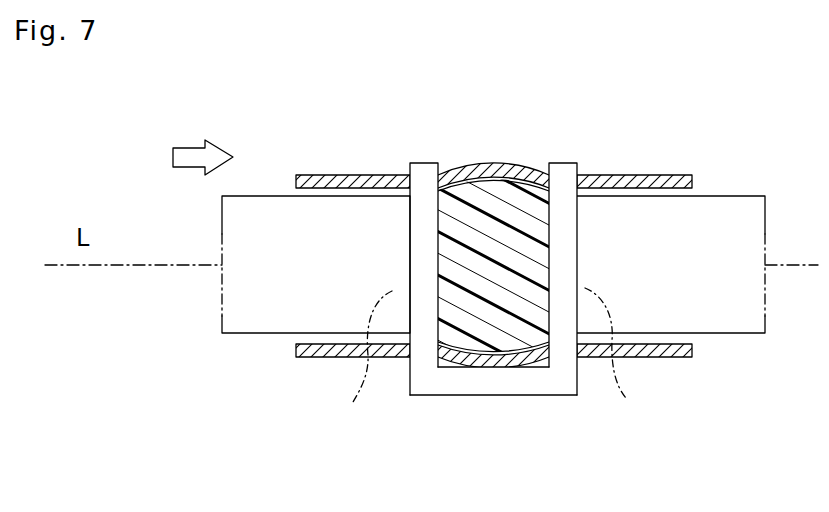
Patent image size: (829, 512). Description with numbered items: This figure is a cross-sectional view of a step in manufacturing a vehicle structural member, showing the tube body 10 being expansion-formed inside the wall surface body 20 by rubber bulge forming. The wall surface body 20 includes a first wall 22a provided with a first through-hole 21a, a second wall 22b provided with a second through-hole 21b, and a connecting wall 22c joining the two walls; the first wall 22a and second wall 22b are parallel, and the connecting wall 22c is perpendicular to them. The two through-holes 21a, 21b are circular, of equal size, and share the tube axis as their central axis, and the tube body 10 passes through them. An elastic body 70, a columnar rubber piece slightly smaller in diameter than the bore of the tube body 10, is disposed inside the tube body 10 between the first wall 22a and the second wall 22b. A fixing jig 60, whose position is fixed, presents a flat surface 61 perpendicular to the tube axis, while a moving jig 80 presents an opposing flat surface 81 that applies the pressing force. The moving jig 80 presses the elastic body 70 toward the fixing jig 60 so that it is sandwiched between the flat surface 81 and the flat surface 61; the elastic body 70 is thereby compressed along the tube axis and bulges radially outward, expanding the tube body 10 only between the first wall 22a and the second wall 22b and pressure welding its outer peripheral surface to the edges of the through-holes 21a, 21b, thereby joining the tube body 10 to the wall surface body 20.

The tube body 10 is at (350, 174).
The wall surface body 20 is at (563, 164).
The fixing jig 60 is at (743, 196).
The moving jig 80 is at (260, 329).
The flat surface 81 is at (415, 217).
The elastic body 70 is at (472, 195).
The flat surface 61 is at (577, 252).
The first through-hole 21a is at (357, 363).
The second through-hole 21b is at (624, 364).
The first wall 22a is at (410, 383).
The second wall 22b is at (577, 382).
The connecting wall 22c is at (492, 388).